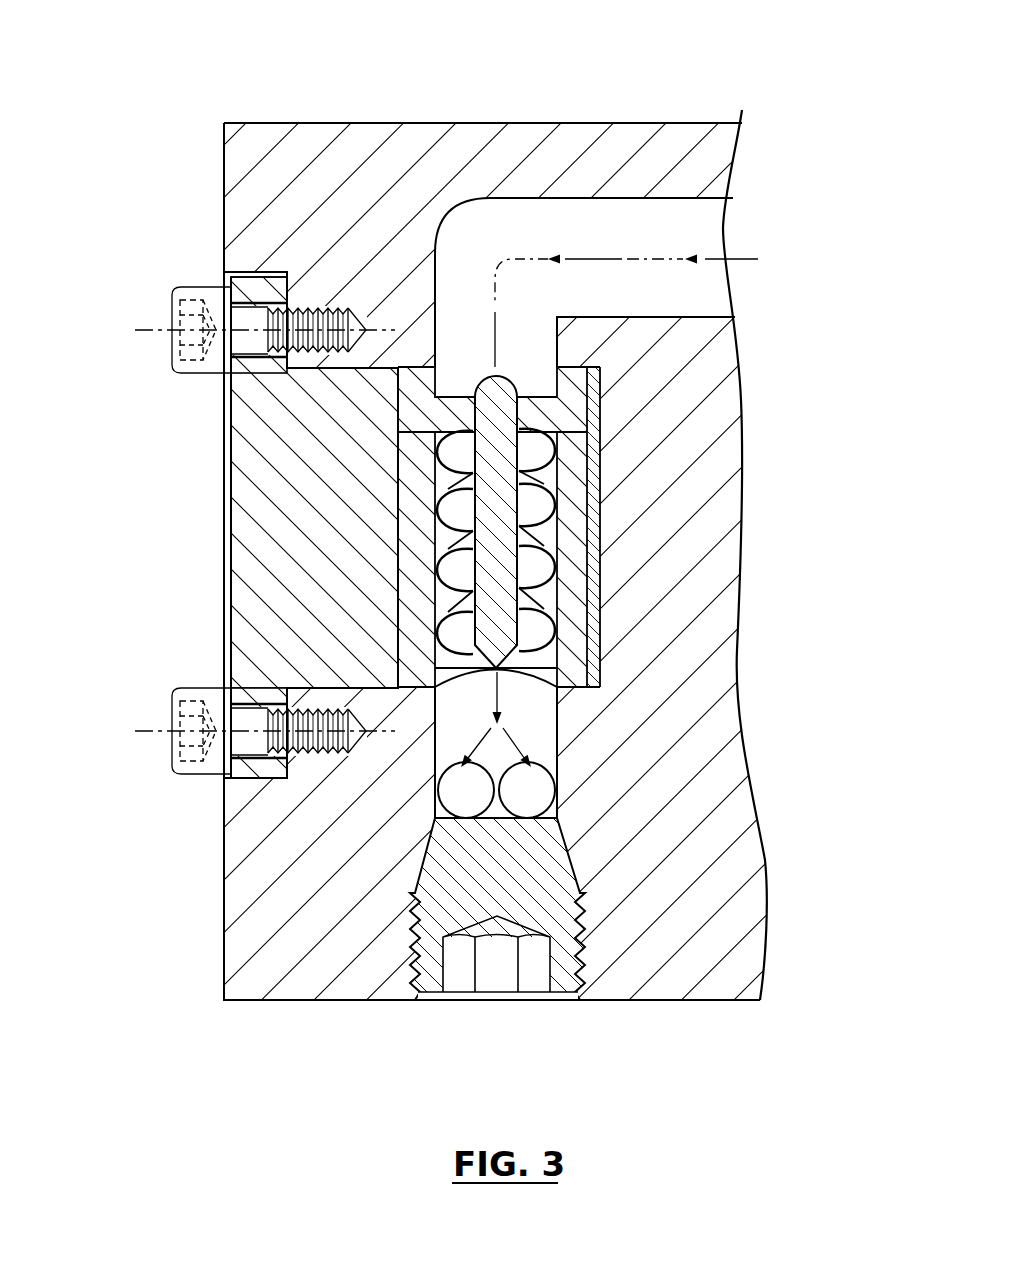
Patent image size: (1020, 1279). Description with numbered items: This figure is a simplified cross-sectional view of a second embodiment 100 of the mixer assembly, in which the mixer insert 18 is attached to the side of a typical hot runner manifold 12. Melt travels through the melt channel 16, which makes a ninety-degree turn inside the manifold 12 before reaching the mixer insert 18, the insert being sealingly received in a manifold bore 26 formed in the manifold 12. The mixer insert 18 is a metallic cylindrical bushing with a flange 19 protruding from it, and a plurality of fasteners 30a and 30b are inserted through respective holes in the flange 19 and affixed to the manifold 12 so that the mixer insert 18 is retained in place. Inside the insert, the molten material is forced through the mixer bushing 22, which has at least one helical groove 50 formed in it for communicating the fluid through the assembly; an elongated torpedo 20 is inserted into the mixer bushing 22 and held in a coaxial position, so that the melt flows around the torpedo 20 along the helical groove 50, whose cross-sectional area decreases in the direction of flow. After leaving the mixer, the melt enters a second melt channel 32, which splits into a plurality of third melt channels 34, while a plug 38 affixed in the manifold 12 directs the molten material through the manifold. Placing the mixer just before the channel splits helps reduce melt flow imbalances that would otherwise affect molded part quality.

The hot runner manifold 12 is at (373, 148).
The melt channel 16 is at (624, 244).
The mixer insert 18 is at (257, 517).
The flange 19 is at (220, 780).
The elongated torpedo 20 is at (567, 405).
The mixer bushing 22 is at (573, 493).
The manifold bore 26 is at (338, 368).
The fastener 30a is at (168, 305).
The fastener 30b is at (172, 757).
The second melt channel 32 is at (550, 718).
The third melt channels 34 is at (476, 806).
The plug 38 is at (566, 977).
The helical groove 50 is at (545, 582).
The second embodiment of the mixer assembly 100 is at (120, 678).